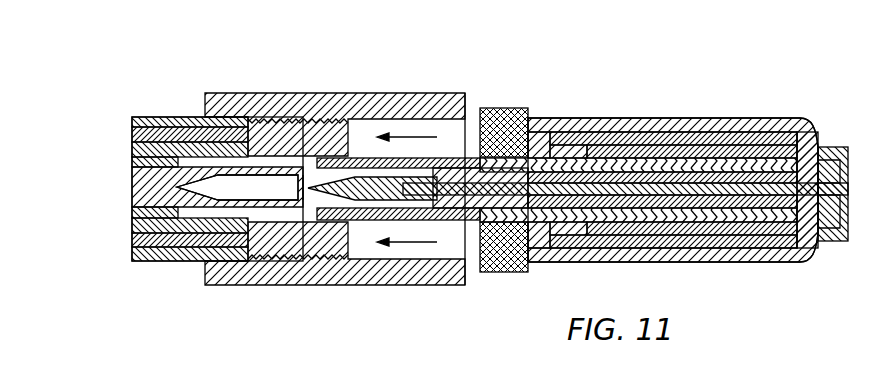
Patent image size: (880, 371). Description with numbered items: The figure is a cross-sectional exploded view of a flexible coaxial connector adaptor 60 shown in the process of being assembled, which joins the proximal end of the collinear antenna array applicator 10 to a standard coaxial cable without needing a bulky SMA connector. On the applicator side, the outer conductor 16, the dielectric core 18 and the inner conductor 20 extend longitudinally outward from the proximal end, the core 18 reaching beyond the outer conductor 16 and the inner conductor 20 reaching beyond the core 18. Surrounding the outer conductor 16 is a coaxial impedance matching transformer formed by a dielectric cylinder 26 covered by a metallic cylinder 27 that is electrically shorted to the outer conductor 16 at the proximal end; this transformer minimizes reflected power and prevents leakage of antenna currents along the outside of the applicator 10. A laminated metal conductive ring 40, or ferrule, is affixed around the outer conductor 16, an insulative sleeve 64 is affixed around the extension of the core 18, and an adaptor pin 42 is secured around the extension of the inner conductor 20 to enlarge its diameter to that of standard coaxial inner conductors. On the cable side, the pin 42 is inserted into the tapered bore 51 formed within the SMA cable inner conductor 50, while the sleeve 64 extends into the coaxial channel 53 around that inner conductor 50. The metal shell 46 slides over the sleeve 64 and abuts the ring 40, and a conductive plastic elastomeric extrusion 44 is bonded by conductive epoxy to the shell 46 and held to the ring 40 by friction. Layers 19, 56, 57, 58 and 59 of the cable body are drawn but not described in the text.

The antenna array applicator 10 is at (630, 82).
The outer conductor 16 is at (742, 160).
The dielectric core 18 is at (757, 178).
The outer jacket 19 is at (650, 122).
The inner conductor 20 is at (818, 140).
The dielectric cylinder 26 is at (712, 150).
The metallic cylinder 27 is at (683, 140).
The laminated metal conductive ring 40 is at (503, 110).
The adaptor pin 42 is at (352, 177).
The conductive plastic elastomeric extrusion 44 is at (243, 100).
The shell 46 is at (292, 128).
The inner conductor of SMA cable 50 is at (128, 193).
The tapered bore 51 is at (270, 193).
The coaxial channel 53 is at (200, 162).
The insulator sleeve 56 is at (225, 236).
The intermediate shell 57 is at (187, 233).
The mating connector body 58 is at (130, 222).
The outer shell 59 is at (148, 262).
The flexible coaxial connector adaptor 60 is at (128, 49).
The insulative sleeve 64 is at (413, 160).